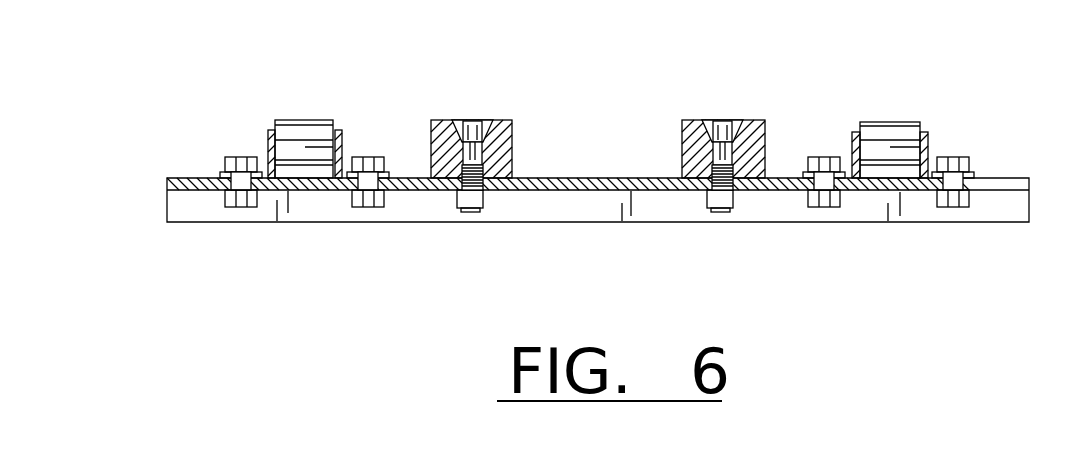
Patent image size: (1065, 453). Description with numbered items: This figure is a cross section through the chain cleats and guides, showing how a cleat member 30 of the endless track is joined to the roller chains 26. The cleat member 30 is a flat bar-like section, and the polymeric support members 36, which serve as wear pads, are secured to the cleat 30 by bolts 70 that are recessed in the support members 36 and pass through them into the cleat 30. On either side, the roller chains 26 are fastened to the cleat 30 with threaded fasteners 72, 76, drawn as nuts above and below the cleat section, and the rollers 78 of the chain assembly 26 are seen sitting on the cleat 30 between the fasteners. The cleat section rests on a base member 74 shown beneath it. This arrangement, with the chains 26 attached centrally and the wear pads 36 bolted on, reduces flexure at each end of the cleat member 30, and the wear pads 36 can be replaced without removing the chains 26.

The roller chains 26 is at (625, 91).
The cleat members 30 is at (555, 207).
The polymeric support members 36 is at (498, 140).
The bolts 70 is at (468, 150).
The threaded fasteners 72 is at (372, 205).
The push bar 74 is at (175, 187).
The threaded fasteners 76 is at (232, 157).
The rollers 78 is at (313, 137).